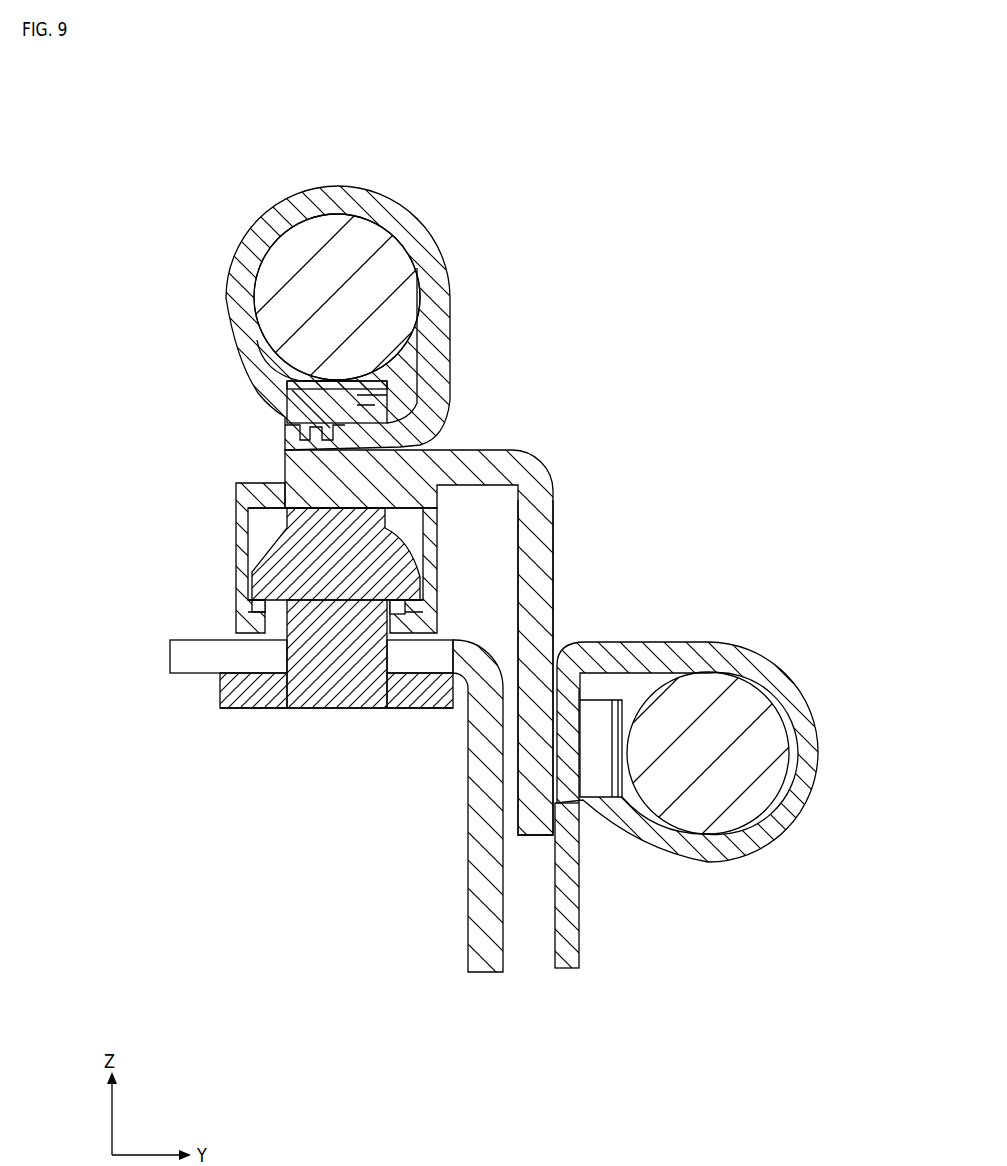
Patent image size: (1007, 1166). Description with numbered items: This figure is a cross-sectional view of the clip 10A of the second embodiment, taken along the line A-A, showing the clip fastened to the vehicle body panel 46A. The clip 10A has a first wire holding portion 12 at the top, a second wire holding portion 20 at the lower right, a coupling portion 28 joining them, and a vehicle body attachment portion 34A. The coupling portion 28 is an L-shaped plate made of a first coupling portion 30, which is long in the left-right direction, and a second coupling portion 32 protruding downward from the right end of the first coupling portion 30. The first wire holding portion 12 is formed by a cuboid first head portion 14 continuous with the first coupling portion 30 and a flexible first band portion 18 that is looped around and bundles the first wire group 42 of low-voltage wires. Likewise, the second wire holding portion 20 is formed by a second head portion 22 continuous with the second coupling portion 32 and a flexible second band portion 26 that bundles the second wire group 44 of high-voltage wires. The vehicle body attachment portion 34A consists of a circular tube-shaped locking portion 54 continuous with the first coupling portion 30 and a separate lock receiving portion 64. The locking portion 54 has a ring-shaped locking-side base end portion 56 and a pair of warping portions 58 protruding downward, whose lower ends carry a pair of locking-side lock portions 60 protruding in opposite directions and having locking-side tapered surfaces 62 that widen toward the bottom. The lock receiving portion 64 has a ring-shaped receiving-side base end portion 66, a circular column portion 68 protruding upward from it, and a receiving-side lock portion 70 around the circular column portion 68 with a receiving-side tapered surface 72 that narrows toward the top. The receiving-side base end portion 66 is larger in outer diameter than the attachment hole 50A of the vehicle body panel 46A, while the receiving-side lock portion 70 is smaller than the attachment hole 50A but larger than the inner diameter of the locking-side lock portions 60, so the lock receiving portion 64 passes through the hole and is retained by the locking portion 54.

The clip 10A is at (545, 232).
The first wire holding portion 12 is at (132, 185).
The first head portion 14 is at (357, 400).
The first band portion 18 is at (262, 230).
The first wire group 42 is at (352, 243).
The coupling portion 28 is at (660, 388).
The first coupling portion 30 is at (480, 467).
The second coupling portion 32 is at (540, 522).
The vehicle body attachment portion 34A is at (262, 462).
The locking portion 54 is at (137, 480).
The locking-side base end portion 56 is at (248, 492).
The warping portions 58 is at (247, 565).
The locking-side lock portions 60 is at (243, 612).
The receiving-side tapered surface 72 is at (387, 527).
The lock receiving portion 64 is at (358, 798).
The receiving-side base end portion 66 is at (248, 712).
The circular column portion 68 is at (285, 690).
The receiving-side lock portion 70 is at (355, 700).
The locking-side tapered surfaces 62 is at (257, 650).
The attachment hole 50A is at (403, 710).
The vehicle body panel 46A is at (450, 883).
The second wire holding portion 20 is at (822, 862).
The second head portion 22 is at (586, 802).
The second band portion 26 is at (720, 850).
The second wire group 44 is at (740, 700).